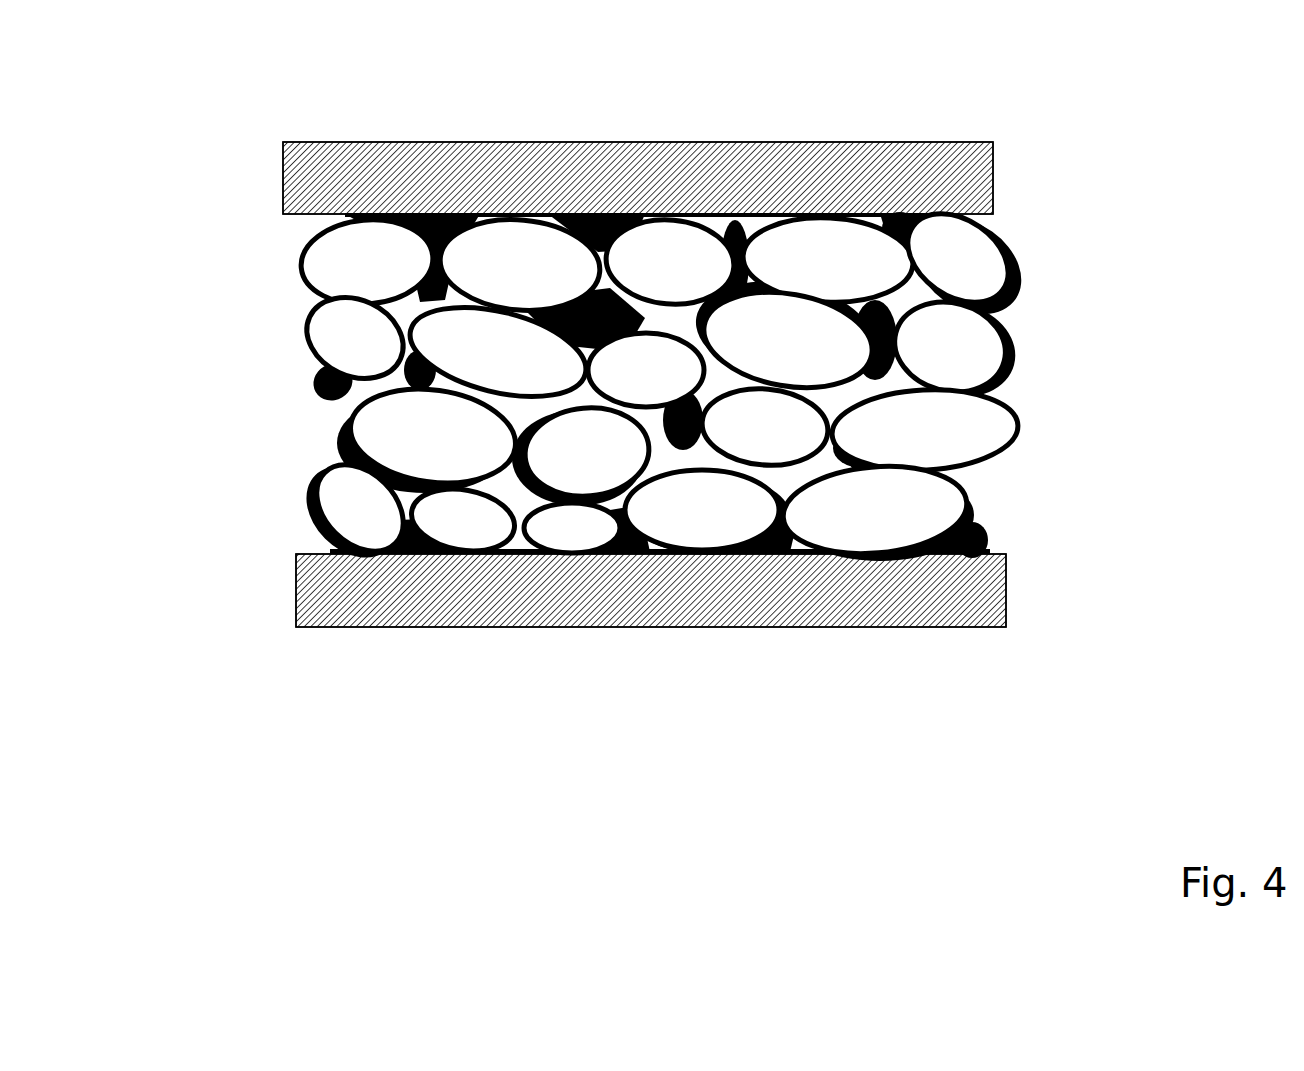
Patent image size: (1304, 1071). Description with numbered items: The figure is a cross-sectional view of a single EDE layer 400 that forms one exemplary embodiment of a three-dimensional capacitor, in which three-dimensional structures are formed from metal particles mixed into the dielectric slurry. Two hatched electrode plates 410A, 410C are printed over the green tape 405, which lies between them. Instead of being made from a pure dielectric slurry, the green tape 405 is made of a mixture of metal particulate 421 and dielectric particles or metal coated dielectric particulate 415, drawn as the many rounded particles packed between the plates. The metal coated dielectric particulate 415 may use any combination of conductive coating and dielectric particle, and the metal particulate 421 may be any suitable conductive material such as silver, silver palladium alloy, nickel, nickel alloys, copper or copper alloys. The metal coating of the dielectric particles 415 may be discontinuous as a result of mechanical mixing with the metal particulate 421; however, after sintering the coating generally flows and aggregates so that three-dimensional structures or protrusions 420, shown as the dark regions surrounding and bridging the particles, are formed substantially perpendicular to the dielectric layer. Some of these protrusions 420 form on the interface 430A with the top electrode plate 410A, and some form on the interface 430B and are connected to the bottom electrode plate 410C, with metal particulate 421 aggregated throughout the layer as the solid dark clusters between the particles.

The EDE layer 400 is at (1240, 42).
The green tape 405 is at (258, 214).
The electrode plate 410A is at (993, 178).
The electrode plate 410C is at (993, 595).
The metal coated dielectric particulate 415 is at (918, 520).
The three-dimensional structures or protrusions 420 is at (403, 214).
The metal particulate 421 is at (903, 214).
The interface with the top electrode 430A is at (618, 214).
The interface with the bottom electrode 430B is at (481, 555).